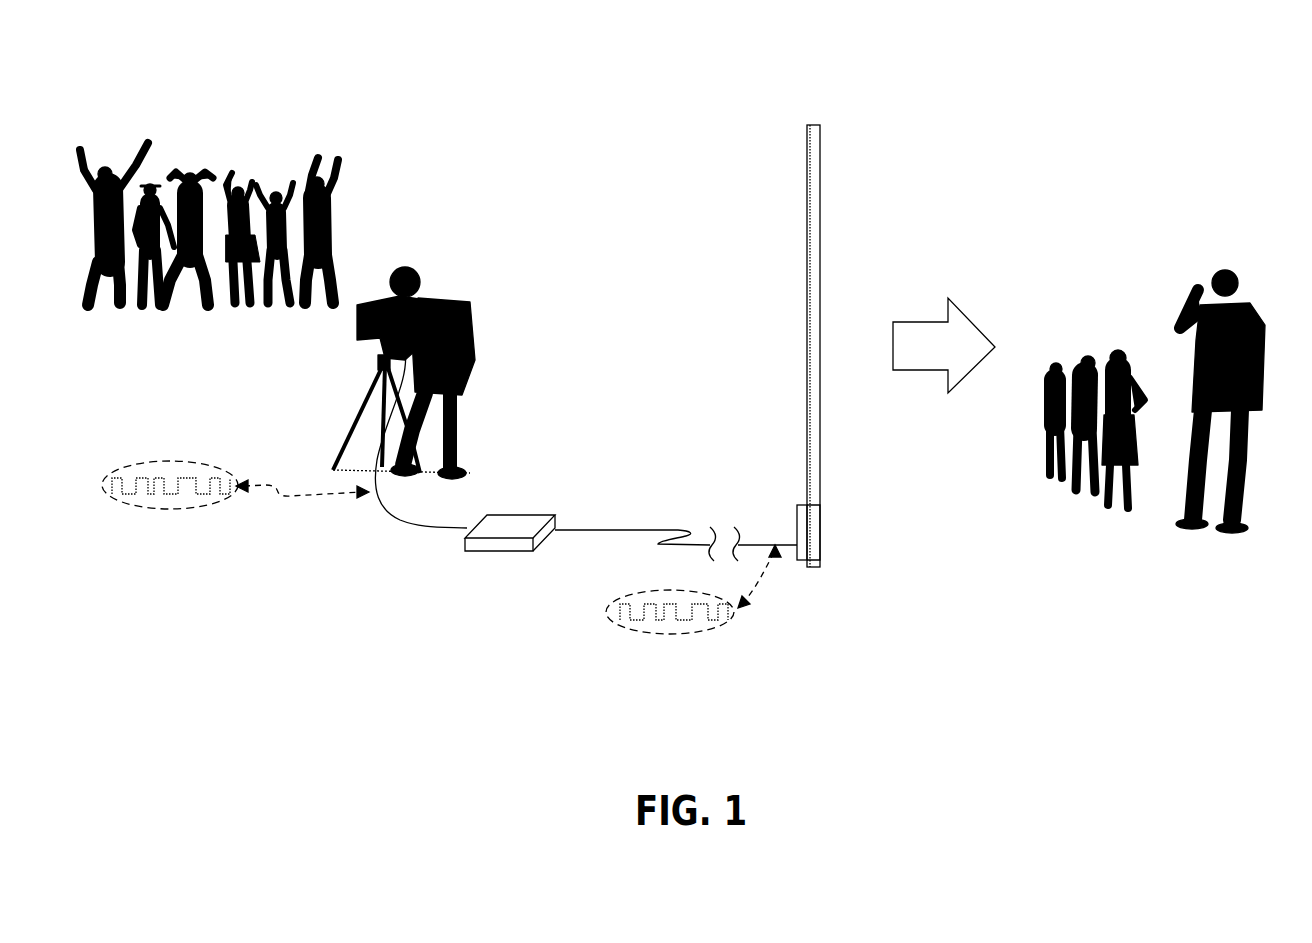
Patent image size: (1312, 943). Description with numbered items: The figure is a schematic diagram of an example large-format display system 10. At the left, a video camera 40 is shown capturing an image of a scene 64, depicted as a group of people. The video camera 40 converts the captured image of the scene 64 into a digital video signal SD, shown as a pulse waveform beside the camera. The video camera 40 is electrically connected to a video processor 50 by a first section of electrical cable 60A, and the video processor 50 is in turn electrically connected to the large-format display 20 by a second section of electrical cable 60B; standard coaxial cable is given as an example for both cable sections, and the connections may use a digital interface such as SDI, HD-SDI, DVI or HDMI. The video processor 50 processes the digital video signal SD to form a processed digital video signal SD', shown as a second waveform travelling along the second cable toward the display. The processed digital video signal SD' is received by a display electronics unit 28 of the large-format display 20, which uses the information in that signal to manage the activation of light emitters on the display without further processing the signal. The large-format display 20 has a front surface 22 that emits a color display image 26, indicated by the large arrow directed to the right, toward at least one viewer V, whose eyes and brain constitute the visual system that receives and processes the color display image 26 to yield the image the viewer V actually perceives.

The large-format display system 10 is at (947, 150).
The scene 64 is at (315, 116).
The video camera 40 is at (368, 337).
The digital video signal SD is at (227, 466).
The first section of electrical cable 60A is at (403, 522).
The video processor 50 is at (525, 518).
The second section of electrical cable 60B is at (628, 530).
The display electronics unit 28 is at (797, 512).
The large-format display 20 is at (812, 125).
The front surface 22 is at (820, 505).
The processed digital video signal SD' is at (665, 589).
The color display image 26 is at (968, 320).
The viewer V is at (1258, 316).